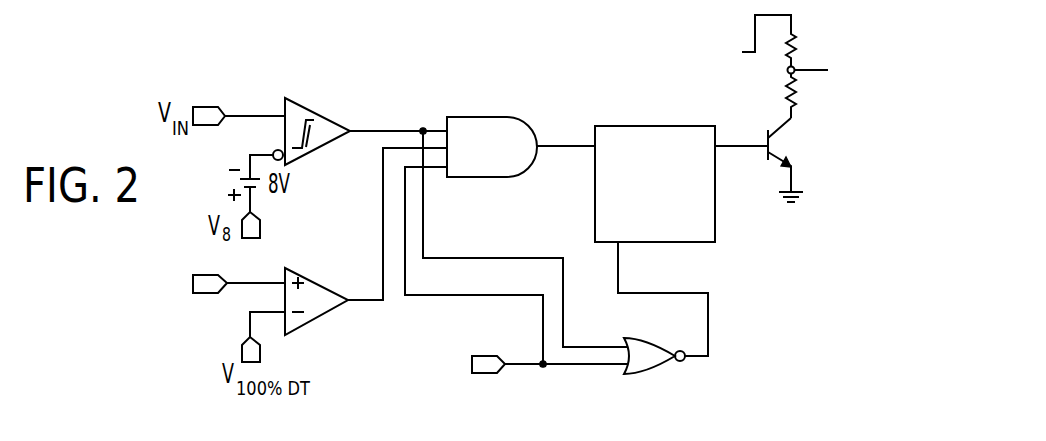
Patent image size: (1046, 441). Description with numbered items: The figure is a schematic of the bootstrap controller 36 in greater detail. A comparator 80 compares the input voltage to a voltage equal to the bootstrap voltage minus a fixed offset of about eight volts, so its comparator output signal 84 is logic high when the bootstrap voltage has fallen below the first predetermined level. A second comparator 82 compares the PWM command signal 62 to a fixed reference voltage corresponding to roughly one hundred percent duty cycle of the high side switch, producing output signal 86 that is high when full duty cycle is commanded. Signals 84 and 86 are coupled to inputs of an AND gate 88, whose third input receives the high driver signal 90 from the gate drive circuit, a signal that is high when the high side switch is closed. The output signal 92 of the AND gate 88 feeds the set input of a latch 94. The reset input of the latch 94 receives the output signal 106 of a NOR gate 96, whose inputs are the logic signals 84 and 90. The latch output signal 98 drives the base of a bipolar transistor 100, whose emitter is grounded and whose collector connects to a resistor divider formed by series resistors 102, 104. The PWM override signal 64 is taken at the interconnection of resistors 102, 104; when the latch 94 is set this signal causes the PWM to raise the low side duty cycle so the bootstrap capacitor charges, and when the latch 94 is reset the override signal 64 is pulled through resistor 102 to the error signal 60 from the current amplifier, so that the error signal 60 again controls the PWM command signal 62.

The bootstrap controller 36 is at (257, 52).
The error signal 60 is at (752, 20).
The PWM command signal 62 is at (248, 283).
The PWM override signal 64 is at (809, 67).
The comparator 80 is at (302, 116).
The second comparator 82 is at (309, 279).
The comparator output signal 84 is at (371, 129).
The output signal 86 is at (382, 193).
The AND gate 88 is at (482, 117).
The high driver signal 90 is at (528, 362).
The output signal 92 is at (571, 146).
The latch 94 is at (595, 188).
The NOR gate 96 is at (643, 338).
The output signal 98 is at (735, 148).
The bipolar transistor 100 is at (789, 153).
The resistor 102 is at (794, 32).
The resistor 104 is at (797, 98).
The output signal 106 is at (712, 323).